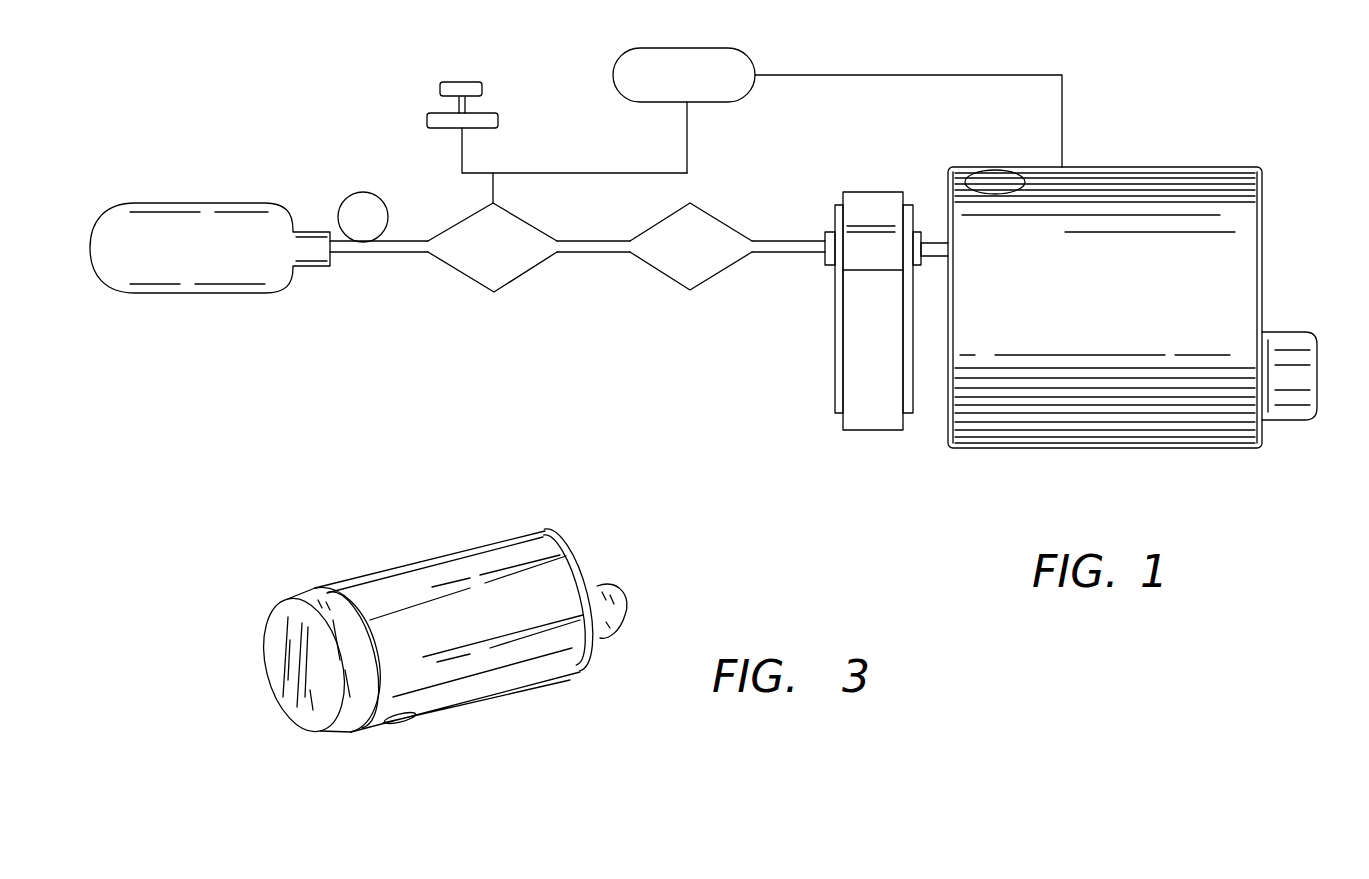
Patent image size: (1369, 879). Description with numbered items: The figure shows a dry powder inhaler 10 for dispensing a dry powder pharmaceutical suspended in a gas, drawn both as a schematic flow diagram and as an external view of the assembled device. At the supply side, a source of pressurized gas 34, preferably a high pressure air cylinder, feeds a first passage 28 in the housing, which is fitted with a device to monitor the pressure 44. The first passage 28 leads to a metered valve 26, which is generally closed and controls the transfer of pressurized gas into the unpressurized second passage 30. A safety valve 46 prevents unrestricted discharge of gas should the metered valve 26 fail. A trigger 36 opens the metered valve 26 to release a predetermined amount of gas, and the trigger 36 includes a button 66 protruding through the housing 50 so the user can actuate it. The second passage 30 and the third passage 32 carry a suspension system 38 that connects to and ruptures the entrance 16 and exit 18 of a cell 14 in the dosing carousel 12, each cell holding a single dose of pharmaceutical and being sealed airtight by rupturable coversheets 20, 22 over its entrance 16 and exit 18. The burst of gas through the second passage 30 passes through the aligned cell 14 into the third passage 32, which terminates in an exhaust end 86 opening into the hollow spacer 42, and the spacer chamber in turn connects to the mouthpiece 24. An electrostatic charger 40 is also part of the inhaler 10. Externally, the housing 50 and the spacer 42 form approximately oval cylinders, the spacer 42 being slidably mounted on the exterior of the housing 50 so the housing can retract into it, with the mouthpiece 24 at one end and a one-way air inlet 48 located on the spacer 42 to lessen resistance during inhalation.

In FIG. 1, the dry powder inhaler 10 is at (350, 362).
In FIG. 3, the dry powder inhaler 10 is at (330, 548).
In FIG. 1, the dosing carousel 12 is at (866, 411).
In FIG. 1, the cell 14 is at (877, 256).
In FIG. 1, the entrance 16 is at (855, 228).
In FIG. 1, the exit 18 is at (885, 230).
In FIG. 1, the rupturable coversheet 20 is at (840, 363).
In FIG. 1, the rupturable coversheet 22 is at (916, 394).
In FIG. 1, the mouthpiece 24 is at (1289, 332).
In FIG. 3, the mouthpiece 24 is at (623, 603).
In FIG. 1, the metered valve 26 is at (463, 277).
In FIG. 1, the first passage 28 is at (366, 256).
In FIG. 1, the second passage 30 is at (582, 257).
In FIG. 1, the third passage 32 is at (930, 280).
In FIG. 1, the source of pressurized gas 34 is at (186, 228).
In FIG. 1, the trigger 36 is at (433, 113).
In FIG. 1, the suspension system 38 is at (829, 232).
In FIG. 1, the electrostatic charger 40 is at (742, 50).
In FIG. 1, the hollow spacer 42 is at (1150, 262).
In FIG. 3, the hollow spacer 42 is at (450, 573).
In FIG. 1, the pressure monitor 44 is at (362, 192).
In FIG. 1, the safety valve 46 is at (664, 272).
In FIG. 1, the one-way air inlet 48 is at (990, 182).
In FIG. 3, the one-way air inlet 48 is at (400, 720).
In FIG. 3, the housing 50 is at (280, 679).
In FIG. 1, the button 66 is at (458, 82).
In FIG. 1, the exhaust end 86 is at (950, 245).